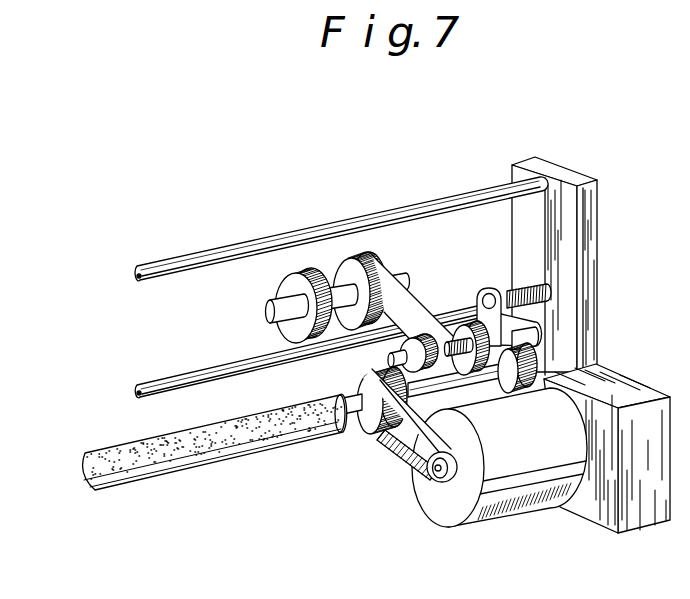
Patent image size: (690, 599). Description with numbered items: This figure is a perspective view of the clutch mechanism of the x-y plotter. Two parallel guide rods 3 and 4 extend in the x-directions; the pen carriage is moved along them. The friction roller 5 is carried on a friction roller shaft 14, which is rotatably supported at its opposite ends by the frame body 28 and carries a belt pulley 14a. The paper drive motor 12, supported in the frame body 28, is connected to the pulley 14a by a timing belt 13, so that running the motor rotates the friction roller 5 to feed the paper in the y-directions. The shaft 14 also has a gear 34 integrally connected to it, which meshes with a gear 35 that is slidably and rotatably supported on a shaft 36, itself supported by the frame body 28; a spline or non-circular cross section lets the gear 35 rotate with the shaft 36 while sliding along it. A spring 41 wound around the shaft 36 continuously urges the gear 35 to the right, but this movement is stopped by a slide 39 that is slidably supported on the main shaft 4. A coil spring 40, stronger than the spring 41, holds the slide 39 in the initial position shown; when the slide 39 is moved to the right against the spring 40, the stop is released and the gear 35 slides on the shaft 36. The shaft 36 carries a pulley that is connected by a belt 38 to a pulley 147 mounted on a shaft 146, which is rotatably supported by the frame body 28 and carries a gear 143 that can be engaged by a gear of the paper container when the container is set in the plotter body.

The guide rod 3 is at (163, 272).
The guide rod 4 is at (158, 387).
The friction roller 5 is at (193, 457).
The paper drive motor 12 is at (528, 475).
The timing belt 13 is at (414, 462).
The friction roller shaft 14 is at (356, 413).
The belt pulley 14a is at (366, 420).
The frame body 28 is at (572, 241).
The gear 34 is at (538, 362).
The gear 35 is at (540, 313).
The shaft 36 is at (540, 334).
The belt 38 is at (382, 264).
The slide 39 is at (492, 294).
The coil spring 40 is at (532, 285).
The spring 41 is at (448, 340).
The gear 143 is at (290, 283).
The shaft 146 is at (268, 308).
The pulley 147 is at (347, 278).